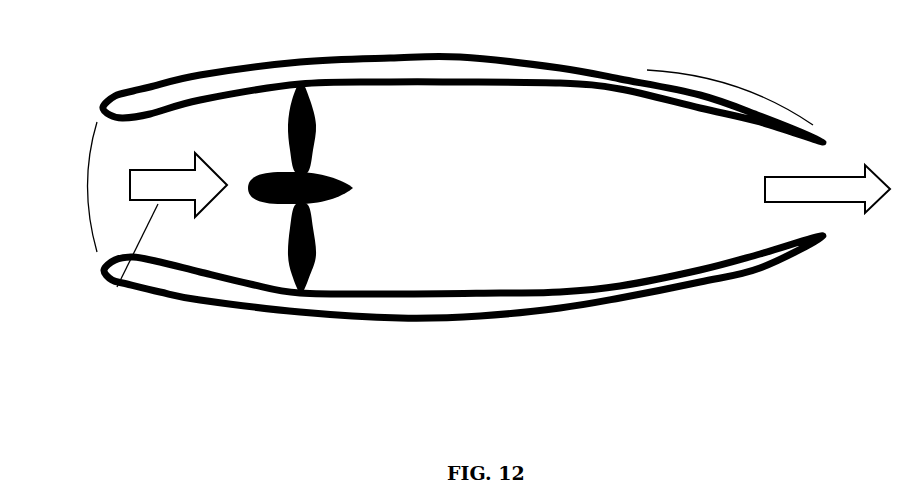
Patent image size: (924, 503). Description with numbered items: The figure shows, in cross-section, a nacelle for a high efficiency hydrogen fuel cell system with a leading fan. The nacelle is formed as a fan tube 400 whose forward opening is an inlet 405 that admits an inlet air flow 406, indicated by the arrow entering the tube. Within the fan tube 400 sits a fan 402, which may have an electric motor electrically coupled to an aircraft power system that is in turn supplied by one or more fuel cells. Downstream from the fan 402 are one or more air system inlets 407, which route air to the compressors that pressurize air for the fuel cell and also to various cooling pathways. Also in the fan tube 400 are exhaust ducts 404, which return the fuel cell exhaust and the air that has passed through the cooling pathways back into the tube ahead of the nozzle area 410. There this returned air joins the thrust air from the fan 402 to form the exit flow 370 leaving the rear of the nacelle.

The fan tube 400 is at (456, 57).
The fan 402 is at (290, 116).
The exhaust ducts 404 is at (597, 292).
The inlet 405 is at (85, 163).
The inlet air flow 406 is at (118, 287).
The air system inlets 407 is at (383, 292).
The nozzle area 410 is at (705, 72).
The exit flow 370 is at (830, 177).